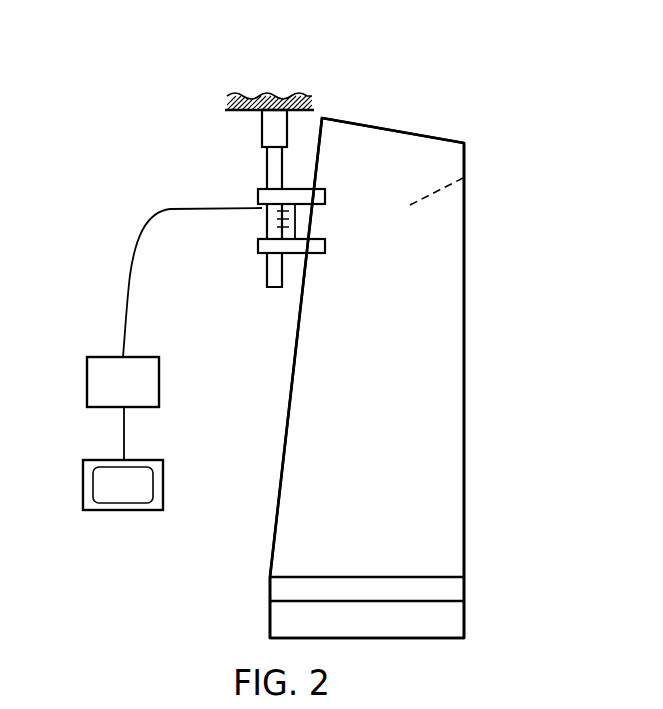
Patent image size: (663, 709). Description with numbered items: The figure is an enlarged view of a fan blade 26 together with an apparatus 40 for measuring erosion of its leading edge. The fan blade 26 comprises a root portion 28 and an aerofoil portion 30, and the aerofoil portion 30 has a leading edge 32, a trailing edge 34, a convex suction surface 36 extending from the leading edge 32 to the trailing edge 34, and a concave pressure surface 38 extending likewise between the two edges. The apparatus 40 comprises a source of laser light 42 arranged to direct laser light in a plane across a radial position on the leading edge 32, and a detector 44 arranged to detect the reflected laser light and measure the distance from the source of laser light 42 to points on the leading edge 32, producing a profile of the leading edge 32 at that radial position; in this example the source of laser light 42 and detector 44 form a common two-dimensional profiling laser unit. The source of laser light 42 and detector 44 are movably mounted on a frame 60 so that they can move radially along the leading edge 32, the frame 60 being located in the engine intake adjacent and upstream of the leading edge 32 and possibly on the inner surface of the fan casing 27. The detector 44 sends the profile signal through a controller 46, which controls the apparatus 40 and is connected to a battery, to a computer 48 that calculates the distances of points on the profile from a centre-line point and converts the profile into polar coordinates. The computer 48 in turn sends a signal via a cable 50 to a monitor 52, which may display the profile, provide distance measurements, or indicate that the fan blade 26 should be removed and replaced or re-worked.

The fan blade 26 is at (445, 380).
The fan casing 27 is at (273, 96).
The root portion 28 is at (450, 627).
The aerofoil portion 30 is at (427, 463).
The leading edge 32 is at (297, 343).
The trailing edge 34 is at (465, 315).
The convex suction surface 36 is at (405, 247).
The concave pressure surface 38 is at (465, 178).
The apparatus 40 is at (257, 170).
The source of laser light 42 is at (278, 216).
The detector 44 is at (270, 224).
The controller 46 is at (131, 296).
The computer 48 is at (89, 378).
The cable 50 is at (124, 417).
The monitor 52 is at (153, 480).
The frame 60 is at (286, 147).